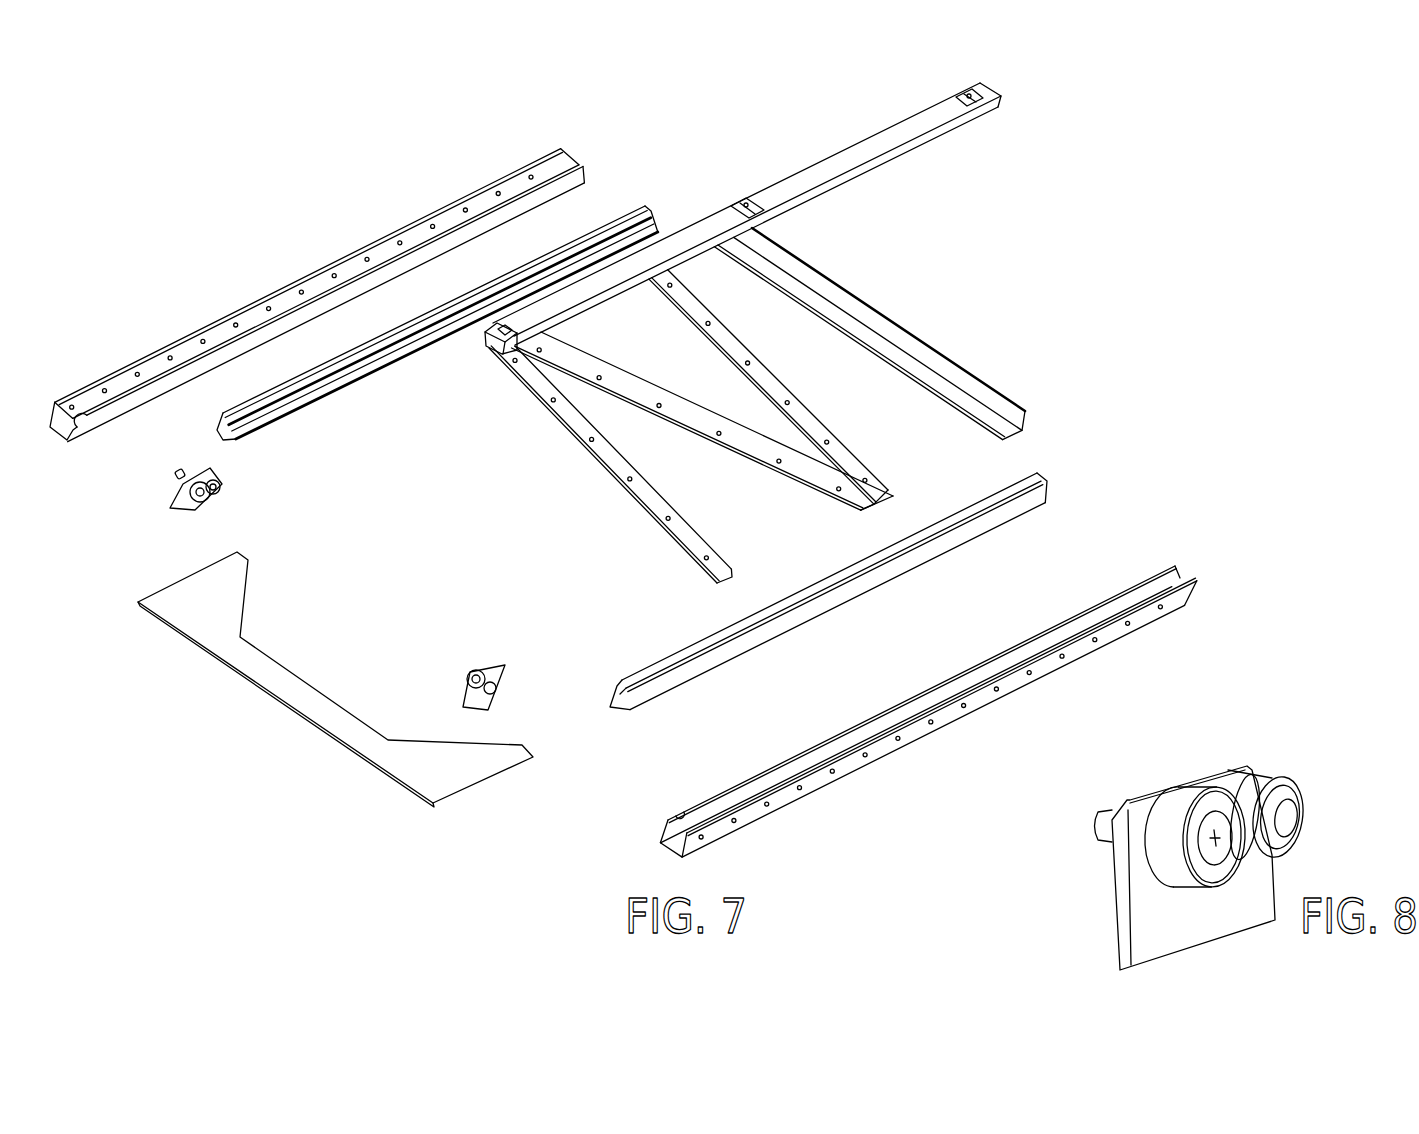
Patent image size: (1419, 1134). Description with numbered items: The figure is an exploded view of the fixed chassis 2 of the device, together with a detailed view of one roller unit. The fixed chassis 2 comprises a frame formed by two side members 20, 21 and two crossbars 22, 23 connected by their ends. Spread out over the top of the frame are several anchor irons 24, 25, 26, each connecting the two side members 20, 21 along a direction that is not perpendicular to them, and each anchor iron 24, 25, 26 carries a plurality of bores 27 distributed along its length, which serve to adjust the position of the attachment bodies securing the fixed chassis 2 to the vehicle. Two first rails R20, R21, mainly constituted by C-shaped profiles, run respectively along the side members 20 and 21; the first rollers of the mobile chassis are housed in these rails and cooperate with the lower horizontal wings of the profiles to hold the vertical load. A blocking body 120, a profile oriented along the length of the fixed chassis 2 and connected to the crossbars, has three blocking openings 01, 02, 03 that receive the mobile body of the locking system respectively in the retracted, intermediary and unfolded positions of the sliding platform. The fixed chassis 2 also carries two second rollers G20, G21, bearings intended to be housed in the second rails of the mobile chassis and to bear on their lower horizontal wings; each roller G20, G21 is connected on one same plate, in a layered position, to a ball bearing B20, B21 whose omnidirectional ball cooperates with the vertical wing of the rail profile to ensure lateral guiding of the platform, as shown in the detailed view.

In FIG. 7, the fixed chassis 2 is at (1142, 297).
In FIG. 7, the side member 20 is at (385, 248).
In FIG. 7, the side member 21 is at (965, 707).
In FIG. 7, the crossbar 22 is at (315, 710).
In FIG. 7, the crossbar 23 is at (905, 343).
In FIG. 7, the anchor iron 24 is at (818, 432).
In FIG. 7, the anchor iron 25 is at (762, 455).
In FIG. 7, the anchor iron 26 is at (695, 540).
In FIG. 7, the bores 27 is at (717, 434).
In FIG. 7, the blocking body 120 is at (907, 138).
In FIG. 7, the first opening 01 is at (488, 345).
In FIG. 7, the second opening 02 is at (745, 206).
In FIG. 7, the third opening 03 is at (975, 96).
In FIG. 7, the first rail R20 is at (375, 362).
In FIG. 7, the first rail R21 is at (648, 667).
In FIG. 7, the ball bearing B20 is at (232, 480).
In FIG. 8, the ball bearing B20 is at (1297, 818).
In FIG. 7, the ball bearing B21 is at (491, 662).
In FIG. 7, the second roller G20 is at (212, 503).
In FIG. 8, the second roller G20 is at (1236, 886).
In FIG. 7, the second roller G21 is at (460, 662).